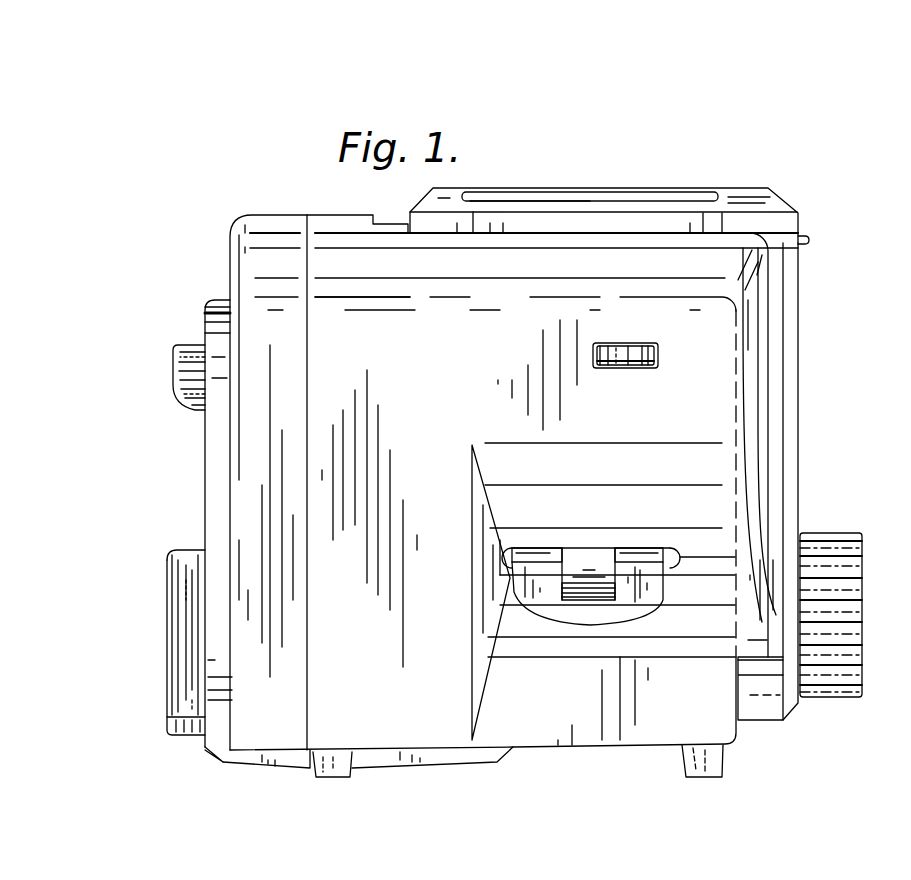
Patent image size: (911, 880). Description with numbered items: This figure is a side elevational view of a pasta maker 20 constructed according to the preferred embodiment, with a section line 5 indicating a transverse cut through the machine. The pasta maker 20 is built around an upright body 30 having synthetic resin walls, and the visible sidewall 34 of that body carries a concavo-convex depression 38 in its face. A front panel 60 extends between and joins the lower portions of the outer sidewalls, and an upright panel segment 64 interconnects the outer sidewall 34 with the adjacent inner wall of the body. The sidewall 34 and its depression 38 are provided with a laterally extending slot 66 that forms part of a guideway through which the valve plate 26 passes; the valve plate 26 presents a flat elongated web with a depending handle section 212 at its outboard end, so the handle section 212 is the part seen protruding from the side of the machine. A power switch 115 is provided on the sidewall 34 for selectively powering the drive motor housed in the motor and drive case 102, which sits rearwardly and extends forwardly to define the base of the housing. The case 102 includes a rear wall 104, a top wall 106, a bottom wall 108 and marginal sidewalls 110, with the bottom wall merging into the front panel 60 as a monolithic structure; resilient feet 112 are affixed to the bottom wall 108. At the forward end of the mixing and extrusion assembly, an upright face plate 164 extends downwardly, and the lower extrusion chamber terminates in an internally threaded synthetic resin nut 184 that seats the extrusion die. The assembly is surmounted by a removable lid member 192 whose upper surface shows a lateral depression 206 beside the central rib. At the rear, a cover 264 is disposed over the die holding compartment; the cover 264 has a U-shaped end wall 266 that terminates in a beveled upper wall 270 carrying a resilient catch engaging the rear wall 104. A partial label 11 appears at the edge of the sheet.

The section line 5- 5 is at (500, 833).
The pasta maker 20 is at (803, 176).
The valve plate 26 is at (613, 553).
The upright body 30 is at (894, 9).
The partial label 11 is at (903, 146).
The sidewall 34 is at (473, 378).
The concavo-convex depression 38 is at (525, 503).
The front panel 60 is at (737, 668).
The upright panel segment 64 is at (773, 457).
The slot 66 is at (678, 560).
The motor and drive case 102 is at (190, 437).
The rear wall 104 is at (205, 480).
The top wall 106 is at (268, 222).
The bottom wall 108 is at (293, 766).
The marginal sidewalls 110 is at (268, 722).
The resilient feet 112 is at (343, 774).
The power switch 115 is at (620, 357).
The face plate 164 is at (802, 438).
The nut 184 is at (824, 668).
The lid member 192 is at (728, 176).
The lateral depression 206 is at (628, 197).
The handle section 212 is at (563, 610).
The cover 264 is at (165, 720).
The end wall 266 is at (193, 698).
The beveled upper wall 270 is at (200, 548).